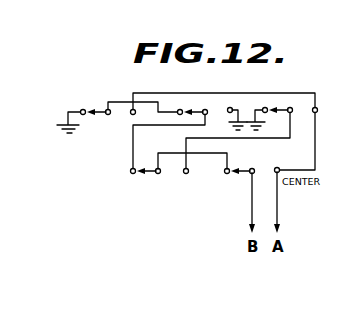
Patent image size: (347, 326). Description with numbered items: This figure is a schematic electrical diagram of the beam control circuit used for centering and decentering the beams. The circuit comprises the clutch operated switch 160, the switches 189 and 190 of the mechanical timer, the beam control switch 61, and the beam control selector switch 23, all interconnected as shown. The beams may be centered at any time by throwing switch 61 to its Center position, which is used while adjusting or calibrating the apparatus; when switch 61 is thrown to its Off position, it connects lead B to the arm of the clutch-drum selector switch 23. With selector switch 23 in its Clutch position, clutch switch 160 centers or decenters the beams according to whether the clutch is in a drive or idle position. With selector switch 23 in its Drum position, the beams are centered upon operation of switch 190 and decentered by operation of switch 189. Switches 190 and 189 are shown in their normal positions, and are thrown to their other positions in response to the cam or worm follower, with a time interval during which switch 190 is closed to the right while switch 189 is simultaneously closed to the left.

The switch of the mechanical timer 190 is at (97, 108).
The switch of the mechanical timer 189 is at (200, 108).
The clutch operated switch 160 is at (282, 108).
The beam control selector switch 23 is at (153, 175).
The beam control switch 61 is at (243, 169).